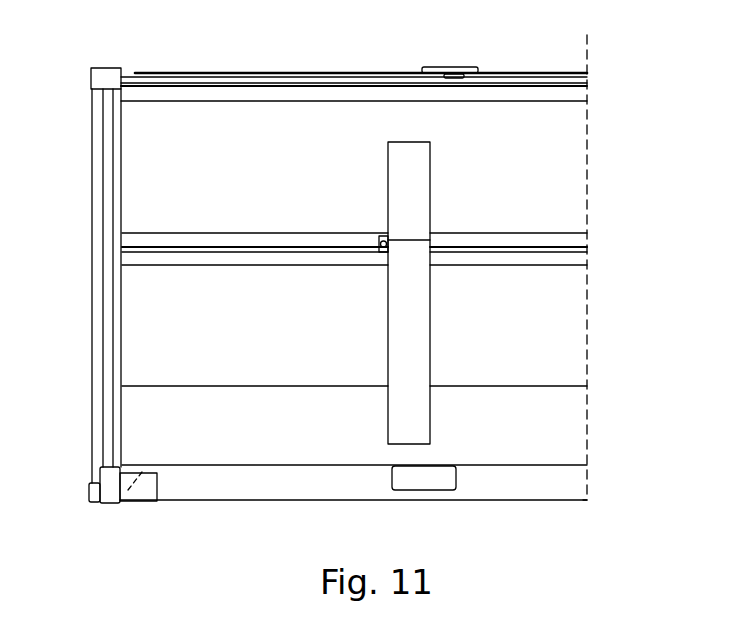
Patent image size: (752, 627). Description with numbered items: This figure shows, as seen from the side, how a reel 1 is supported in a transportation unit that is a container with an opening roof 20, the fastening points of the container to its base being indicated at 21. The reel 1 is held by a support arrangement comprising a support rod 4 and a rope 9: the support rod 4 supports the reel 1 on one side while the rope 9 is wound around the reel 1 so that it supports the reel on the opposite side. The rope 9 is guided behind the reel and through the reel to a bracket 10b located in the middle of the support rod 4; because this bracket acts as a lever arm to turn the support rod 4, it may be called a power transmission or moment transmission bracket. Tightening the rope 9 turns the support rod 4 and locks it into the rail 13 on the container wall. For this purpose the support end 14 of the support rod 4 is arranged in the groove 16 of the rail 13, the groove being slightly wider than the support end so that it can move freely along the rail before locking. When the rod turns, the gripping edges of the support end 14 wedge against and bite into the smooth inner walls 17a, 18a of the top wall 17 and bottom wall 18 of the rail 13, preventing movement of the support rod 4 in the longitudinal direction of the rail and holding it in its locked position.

The reel 1 is at (412, 157).
The support rod 4 is at (380, 252).
The rope 9 is at (430, 201).
The bracket 10b is at (381, 235).
The rail 13 is at (196, 223).
The support end 14 is at (383, 255).
The rail groove 16 is at (165, 248).
The top wall 17 is at (197, 248).
The inner wall of top wall 17a is at (575, 248).
The bottom wall 18 is at (217, 252).
The inner wall of bottom wall 18a is at (548, 247).
The opening roof 20 is at (517, 72).
The fastening points 21 is at (92, 500).